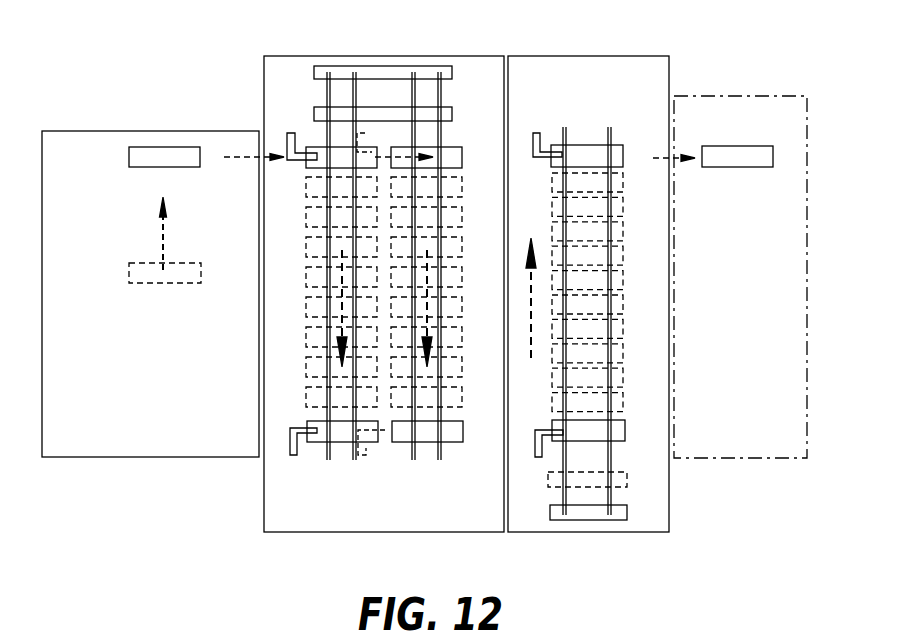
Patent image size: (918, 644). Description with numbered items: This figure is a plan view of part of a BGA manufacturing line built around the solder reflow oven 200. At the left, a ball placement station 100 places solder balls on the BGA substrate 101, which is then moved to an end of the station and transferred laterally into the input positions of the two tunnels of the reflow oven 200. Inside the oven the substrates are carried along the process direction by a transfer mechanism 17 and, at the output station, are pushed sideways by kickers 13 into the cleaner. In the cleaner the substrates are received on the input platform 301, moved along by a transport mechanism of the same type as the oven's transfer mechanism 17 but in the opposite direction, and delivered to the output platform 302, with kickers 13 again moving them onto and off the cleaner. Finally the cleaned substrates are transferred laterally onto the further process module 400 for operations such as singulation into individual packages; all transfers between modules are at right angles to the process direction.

The kickers 13 is at (292, 133).
The transfer mechanism 17 is at (381, 72).
The ball placement station 100 is at (128, 430).
The BGA substrate 101 is at (170, 156).
The solder reflow oven 200 is at (387, 513).
The input platform 301 is at (593, 430).
The output platform 302 is at (589, 153).
The further process module 400 is at (773, 423).